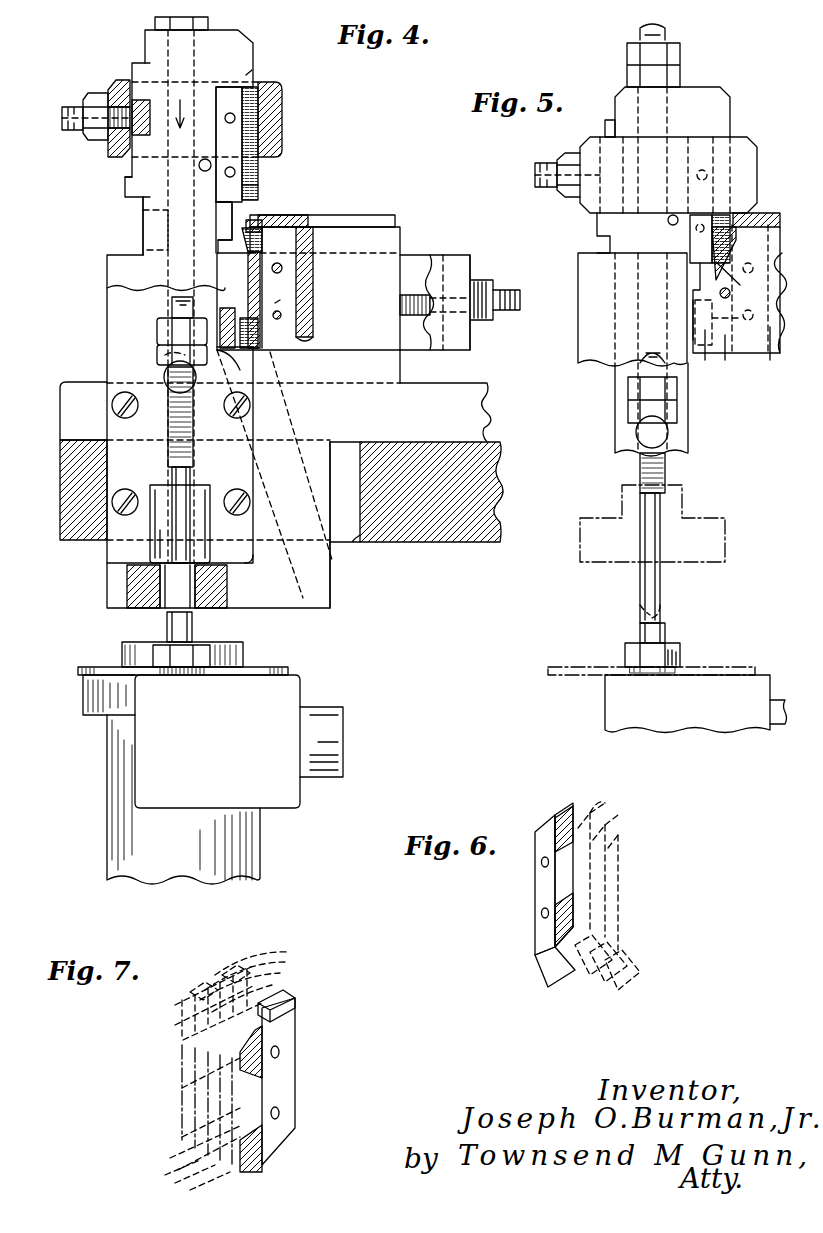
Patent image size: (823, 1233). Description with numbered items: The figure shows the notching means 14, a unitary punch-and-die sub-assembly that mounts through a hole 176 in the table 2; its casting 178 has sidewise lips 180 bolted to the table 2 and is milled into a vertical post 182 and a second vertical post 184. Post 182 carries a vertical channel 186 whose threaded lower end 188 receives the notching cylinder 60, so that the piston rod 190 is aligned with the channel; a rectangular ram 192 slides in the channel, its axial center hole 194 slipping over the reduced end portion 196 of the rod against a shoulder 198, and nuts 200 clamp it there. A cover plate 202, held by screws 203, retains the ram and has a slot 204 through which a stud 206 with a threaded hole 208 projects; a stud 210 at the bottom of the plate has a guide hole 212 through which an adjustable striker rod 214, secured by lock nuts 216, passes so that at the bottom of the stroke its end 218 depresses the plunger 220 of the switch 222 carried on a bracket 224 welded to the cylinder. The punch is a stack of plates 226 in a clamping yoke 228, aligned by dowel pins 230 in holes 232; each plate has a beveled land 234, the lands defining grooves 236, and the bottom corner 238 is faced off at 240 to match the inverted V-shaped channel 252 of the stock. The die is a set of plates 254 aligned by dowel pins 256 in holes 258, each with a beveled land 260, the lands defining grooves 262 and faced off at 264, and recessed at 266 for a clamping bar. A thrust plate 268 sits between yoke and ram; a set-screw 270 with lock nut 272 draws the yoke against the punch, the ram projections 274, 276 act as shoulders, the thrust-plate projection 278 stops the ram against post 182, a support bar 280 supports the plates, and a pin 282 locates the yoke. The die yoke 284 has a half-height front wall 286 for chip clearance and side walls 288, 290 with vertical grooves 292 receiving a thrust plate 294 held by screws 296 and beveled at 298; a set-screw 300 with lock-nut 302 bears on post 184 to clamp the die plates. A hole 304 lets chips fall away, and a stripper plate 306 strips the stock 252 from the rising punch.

In FIG. 4, the table 2 is at (462, 538).
In FIG. 4, the notching means 14 is at (354, 184).
In FIG. 4, the notching cylinder 60 is at (112, 780).
In FIG. 4, the hole 176 is at (352, 542).
In FIG. 4, the casting 178 is at (330, 598).
In FIG. 4, the lips 180 is at (440, 392).
In FIG. 4, the vertical post 182 is at (118, 289).
In FIG. 5, the vertical post 182 is at (586, 290).
In FIG. 4, the second vertical post 184 is at (398, 236).
In FIG. 4, the vertical channel 186 is at (112, 272).
In FIG. 4, the threaded lower end 188 is at (108, 590).
In FIG. 4, the piston rod 190 is at (228, 614).
In FIG. 4, the ram 192 is at (148, 228).
In FIG. 5, the ram 192 is at (618, 428).
In FIG. 4, the axial center hole 194 is at (166, 246).
In FIG. 4, the end portion of piston rod 196 is at (143, 213).
In FIG. 5, the end portion of piston rod 196 is at (640, 33).
In FIG. 4, the shoulder 198 is at (248, 566).
In FIG. 4, the nuts 200 is at (156, 23).
In FIG. 5, the nuts 200 is at (682, 75).
In FIG. 4, the cover plate 202 is at (116, 326).
In FIG. 4, the screws 203 is at (112, 414).
In FIG. 4, the slot 204 is at (165, 426).
In FIG. 5, the slot 204 is at (655, 344).
In FIG. 4, the stud 206 is at (176, 383).
In FIG. 5, the stud 206 is at (660, 434).
In FIG. 4, the threaded hole 208 is at (168, 356).
In FIG. 4, the stud 210 is at (202, 532).
In FIG. 5, the stud 210 is at (676, 516).
In FIG. 4, the guide hole 212 is at (165, 528).
In FIG. 4, the striker rod 214 is at (192, 450).
In FIG. 5, the striker rod 214 is at (645, 510).
In FIG. 4, the lock nuts 216 is at (160, 338).
In FIG. 5, the lock nuts 216 is at (630, 392).
In FIG. 4, the end of striker rod 218 is at (178, 586).
In FIG. 5, the end of striker rod 218 is at (652, 618).
In FIG. 4, the plunger 220 is at (168, 626).
In FIG. 5, the plunger 220 is at (660, 634).
In FIG. 4, the switch 222 is at (282, 800).
In FIG. 5, the switch 222 is at (618, 705).
In FIG. 4, the bracket 224 is at (106, 670).
In FIG. 5, the bracket 224 is at (598, 668).
In FIG. 4, the punch plates 226 is at (228, 93).
In FIG. 6, the punch plates 226 is at (548, 976).
In FIG. 4, the clamping yoke 228 is at (120, 90).
In FIG. 5, the clamping yoke 228 is at (745, 148).
In FIG. 4, the dowel pins 230 is at (230, 167).
In FIG. 6, the holes 232 is at (541, 914).
In FIG. 4, the land 234 is at (255, 170).
In FIG. 6, the land 234 is at (564, 810).
In FIG. 6, the grooves 236 is at (592, 812).
In FIG. 6, the bottom corner 238 is at (633, 960).
In FIG. 4, the faced-off portion 240 is at (245, 212).
In FIG. 6, the faced-off portion 240 is at (562, 930).
In FIG. 4, the inverted V-shaped channel 252 is at (252, 220).
In FIG. 4, the die plates 254 is at (283, 277).
In FIG. 7, the die plates 254 is at (270, 988).
In FIG. 4, the dowel pins 256 is at (278, 320).
In FIG. 7, the holes 258 is at (279, 1112).
In FIG. 4, the land 260 is at (256, 295).
In FIG. 5, the land 260 is at (712, 362).
In FIG. 7, the land 260 is at (262, 1054).
In FIG. 7, the grooves 262 is at (191, 1177).
In FIG. 4, the faced-off upper end 264 is at (278, 222).
In FIG. 5, the faced-off upper end 264 is at (740, 230).
In FIG. 7, the faced-off upper end 264 is at (268, 1030).
In FIG. 7, the recess 266 is at (196, 1074).
In FIG. 4, the thrust plate 268 is at (136, 170).
In FIG. 5, the thrust plate 268 is at (605, 127).
In FIG. 4, the set-screw 270 is at (62, 114).
In FIG. 5, the set-screw 270 is at (536, 174).
In FIG. 4, the lock nut 272 is at (92, 100).
In FIG. 5, the lock nut 272 is at (562, 158).
In FIG. 4, the projection 274 is at (148, 48).
In FIG. 5, the projection 274 is at (720, 108).
In FIG. 4, the projection 276 is at (246, 75).
In FIG. 4, the projection 278 is at (126, 190).
In FIG. 5, the projection 278 is at (598, 240).
In FIG. 4, the support bar 280 is at (226, 226).
In FIG. 5, the support bar 280 is at (693, 276).
In FIG. 4, the pin 282 is at (204, 170).
In FIG. 5, the pin 282 is at (670, 226).
In FIG. 4, the die yoke 284 is at (492, 345).
In FIG. 4, the front wall 286 is at (246, 356).
In FIG. 5, the front wall 286 is at (700, 326).
In FIG. 4, the side wall 288 is at (415, 262).
In FIG. 4, the side wall 290 is at (462, 262).
In FIG. 5, the side wall 290 is at (770, 365).
In FIG. 4, the vertical grooves 292 is at (246, 280).
In FIG. 5, the vertical grooves 292 is at (728, 328).
In FIG. 4, the thrust plate 294 is at (285, 313).
In FIG. 4, the screws 296 is at (262, 296).
In FIG. 5, the screws 296 is at (731, 295).
In FIG. 4, the beveled top edge 298 is at (283, 294).
In FIG. 5, the beveled top edge 298 is at (743, 278).
In FIG. 4, the set-screw 300 is at (505, 290).
In FIG. 4, the lock-nut 302 is at (485, 283).
In FIG. 4, the hole 304 is at (300, 416).
In FIG. 4, the stripper plate 306 is at (320, 225).
In FIG. 5, the stripper plate 306 is at (758, 216).